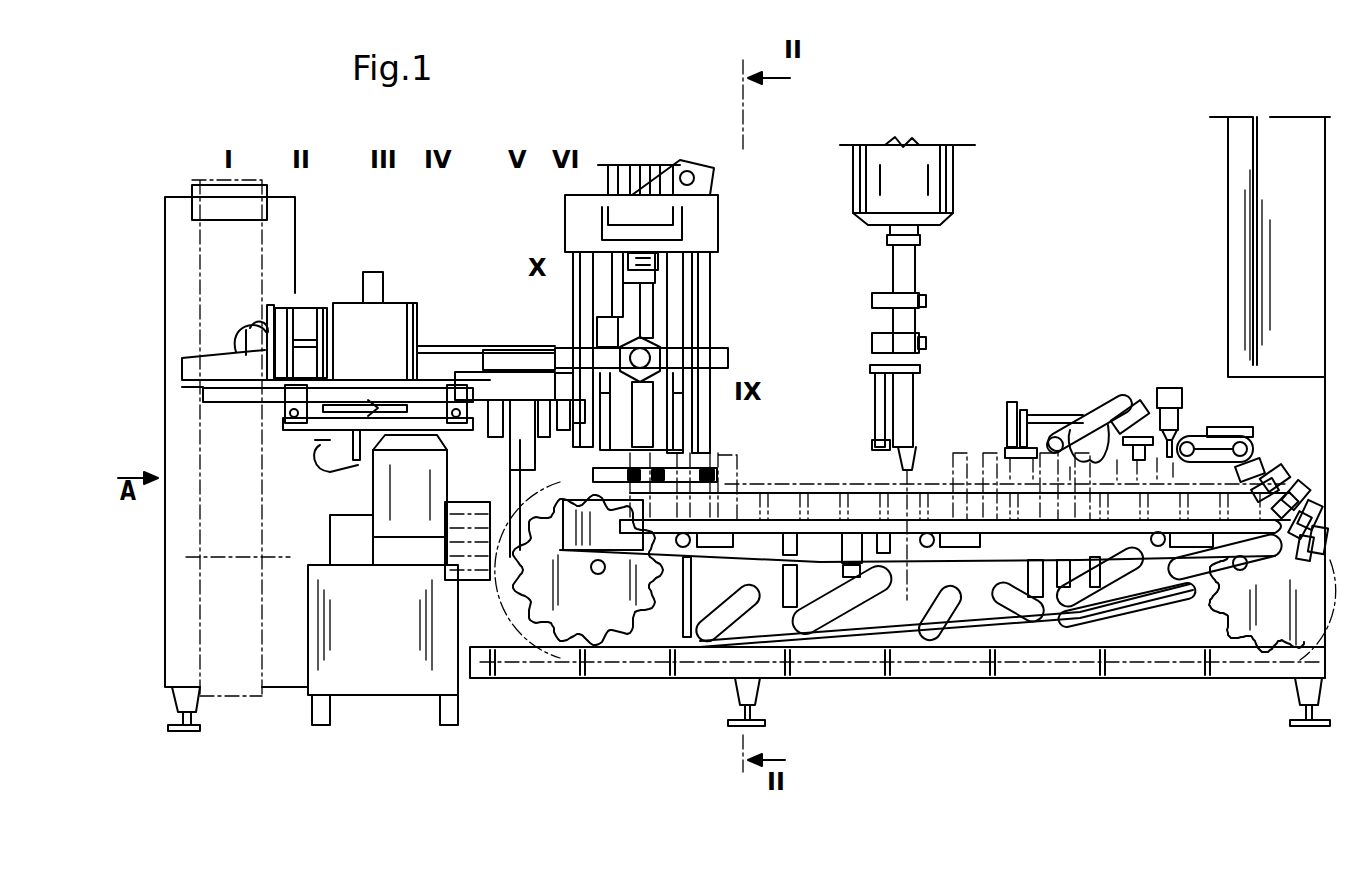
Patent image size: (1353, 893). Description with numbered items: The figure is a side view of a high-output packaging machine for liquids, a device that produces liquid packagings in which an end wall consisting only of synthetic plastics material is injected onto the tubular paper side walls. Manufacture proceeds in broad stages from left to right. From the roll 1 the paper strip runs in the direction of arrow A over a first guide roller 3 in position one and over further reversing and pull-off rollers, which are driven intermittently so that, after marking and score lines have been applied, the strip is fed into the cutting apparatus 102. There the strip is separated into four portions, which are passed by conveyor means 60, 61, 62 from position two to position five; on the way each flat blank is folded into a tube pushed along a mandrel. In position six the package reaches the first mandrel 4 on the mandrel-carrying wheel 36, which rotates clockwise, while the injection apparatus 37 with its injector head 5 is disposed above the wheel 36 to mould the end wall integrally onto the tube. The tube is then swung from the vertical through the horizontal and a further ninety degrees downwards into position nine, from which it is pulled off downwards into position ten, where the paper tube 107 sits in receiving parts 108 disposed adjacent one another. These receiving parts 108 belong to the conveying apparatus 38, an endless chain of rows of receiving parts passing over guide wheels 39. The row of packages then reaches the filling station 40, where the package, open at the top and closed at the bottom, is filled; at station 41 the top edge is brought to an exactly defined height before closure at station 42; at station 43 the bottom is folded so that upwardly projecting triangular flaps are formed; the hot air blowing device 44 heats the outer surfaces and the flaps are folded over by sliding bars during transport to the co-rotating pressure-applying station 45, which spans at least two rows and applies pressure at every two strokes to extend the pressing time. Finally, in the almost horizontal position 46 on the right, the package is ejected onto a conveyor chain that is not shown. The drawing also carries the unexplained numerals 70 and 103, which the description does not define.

The roll 1 is at (242, 672).
The first guide roller 3 is at (212, 198).
The first mandrel 4 is at (568, 345).
The injector head 5 is at (663, 250).
The mandrel-carrying wheel 36 is at (642, 405).
The injection apparatus 37 is at (648, 165).
The conveying apparatus 38 is at (643, 660).
The guide wheels 39 is at (1263, 620).
The filling station 40 is at (920, 365).
The station 41 is at (1014, 392).
The station 42 is at (1078, 385).
The station 43 is at (1141, 402).
The hot air blowing device 44 is at (1170, 375).
The co-rotating pressure-applying station 45 is at (1216, 415).
The position 46 is at (1322, 520).
The conveyor means 60 is at (512, 392).
The conveyor means 61 is at (262, 404).
The conveyor means 62 is at (383, 422).
The hopper 70 is at (762, 275).
The cutting apparatus 102 is at (205, 363).
The center line 103 is at (243, 557).
The paper tube 107 is at (990, 450).
The receiving parts 108 is at (600, 468).